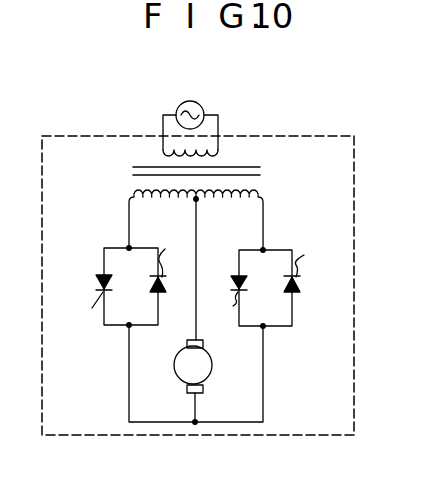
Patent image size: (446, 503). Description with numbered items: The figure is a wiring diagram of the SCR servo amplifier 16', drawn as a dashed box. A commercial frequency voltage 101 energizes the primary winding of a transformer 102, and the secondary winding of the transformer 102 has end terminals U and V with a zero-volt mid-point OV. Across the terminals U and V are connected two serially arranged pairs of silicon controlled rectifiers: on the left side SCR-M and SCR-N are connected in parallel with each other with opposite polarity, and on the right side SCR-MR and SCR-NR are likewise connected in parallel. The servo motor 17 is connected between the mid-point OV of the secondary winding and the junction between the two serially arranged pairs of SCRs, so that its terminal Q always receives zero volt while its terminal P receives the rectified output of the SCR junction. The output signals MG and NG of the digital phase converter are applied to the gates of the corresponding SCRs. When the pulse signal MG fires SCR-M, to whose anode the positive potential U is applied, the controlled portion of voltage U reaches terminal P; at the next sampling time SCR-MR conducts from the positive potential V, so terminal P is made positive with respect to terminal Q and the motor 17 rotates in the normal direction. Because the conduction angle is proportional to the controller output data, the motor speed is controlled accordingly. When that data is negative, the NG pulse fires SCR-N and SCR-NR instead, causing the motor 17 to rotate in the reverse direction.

The SCR servo amplifier 16' is at (198, 268).
The commercial frequency voltage 101 is at (200, 104).
The transformer 102 is at (265, 182).
The servo motor 17 is at (207, 380).
The secondary winding terminal U is at (113, 193).
The secondary winding terminal V is at (279, 193).
The mid-point of the secondary winding OV is at (213, 268).
The SCR- M is at (100, 282).
The SCR- N is at (165, 288).
The SCR- MR is at (231, 282).
The SCR- NR is at (299, 288).
The output signal MG is at (99, 313).
The output signal NG is at (248, 251).
The terminal Q of the servo motor Q is at (205, 339).
The terminal P of the servo motor P is at (200, 398).